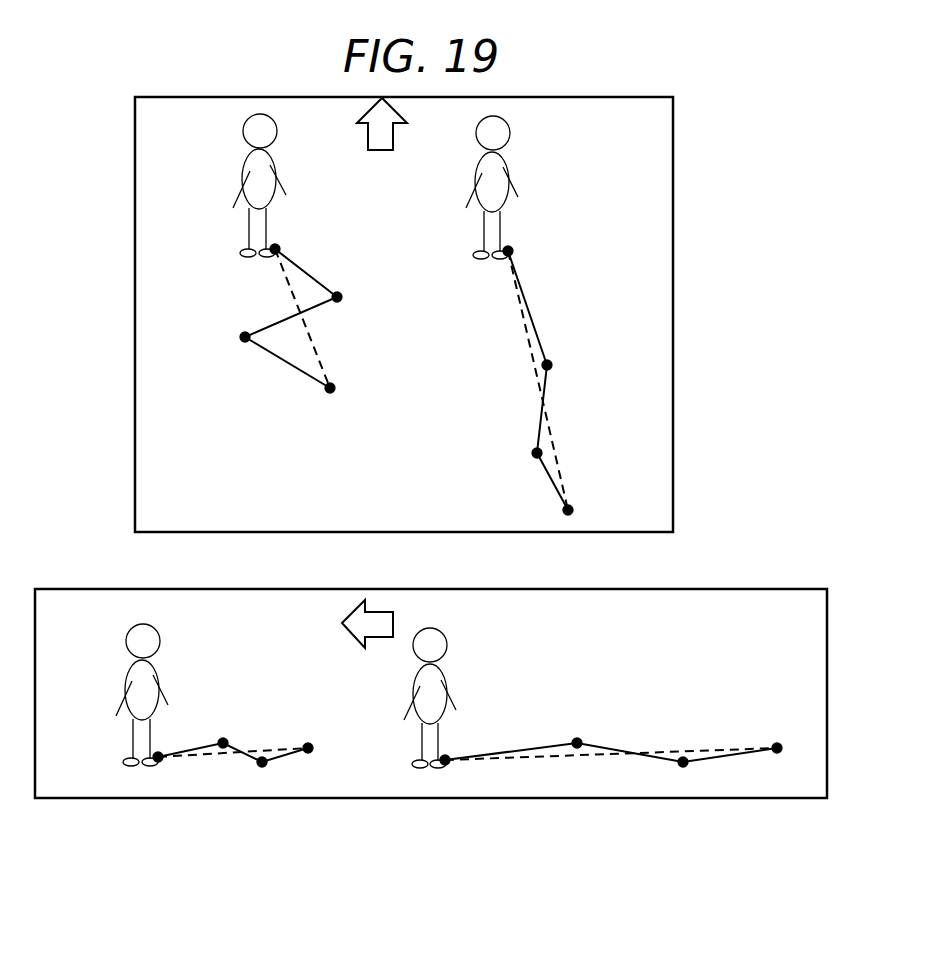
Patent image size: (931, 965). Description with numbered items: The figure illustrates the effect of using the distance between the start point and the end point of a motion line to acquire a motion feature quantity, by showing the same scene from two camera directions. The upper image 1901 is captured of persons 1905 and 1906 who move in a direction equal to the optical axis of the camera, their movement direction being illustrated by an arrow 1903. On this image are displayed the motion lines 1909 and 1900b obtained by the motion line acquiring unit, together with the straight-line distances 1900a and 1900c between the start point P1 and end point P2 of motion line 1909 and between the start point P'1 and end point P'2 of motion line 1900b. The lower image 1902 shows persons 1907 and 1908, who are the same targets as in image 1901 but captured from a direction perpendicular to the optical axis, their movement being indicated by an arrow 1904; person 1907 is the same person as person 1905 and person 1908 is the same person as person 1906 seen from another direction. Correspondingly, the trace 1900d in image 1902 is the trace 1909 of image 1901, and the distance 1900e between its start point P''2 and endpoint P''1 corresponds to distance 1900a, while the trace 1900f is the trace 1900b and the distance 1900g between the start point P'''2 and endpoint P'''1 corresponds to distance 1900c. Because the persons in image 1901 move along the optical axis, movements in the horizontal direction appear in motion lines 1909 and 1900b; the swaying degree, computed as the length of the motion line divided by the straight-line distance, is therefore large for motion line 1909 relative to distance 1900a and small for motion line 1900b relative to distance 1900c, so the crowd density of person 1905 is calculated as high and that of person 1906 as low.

The image 1901 is at (449, 311).
The image 1902 is at (431, 669).
The arrow 1903 is at (400, 154).
The arrow 1904 is at (415, 621).
The person 1905 is at (286, 185).
The person 1906 is at (520, 187).
The person 1907 is at (181, 695).
The person 1908 is at (469, 698).
The motion line 1909 is at (307, 307).
The straight line distance 1900a is at (343, 318).
The motion line 1900b is at (571, 380).
The straight line distance 1900c is at (579, 380).
The trace 1900d is at (233, 722).
The distance 1900e is at (248, 729).
The trace 1900f is at (611, 733).
The distance 1900g is at (611, 730).
The start point P1 is at (301, 408).
The end point P2 is at (244, 270).
The start point P'1 is at (595, 489).
The end point P'2 is at (538, 232).
The endpoint P''1 is at (331, 759).
The start point P''2 is at (185, 771).
The start point P'''1 is at (786, 766).
The endpoint P'''2 is at (473, 772).